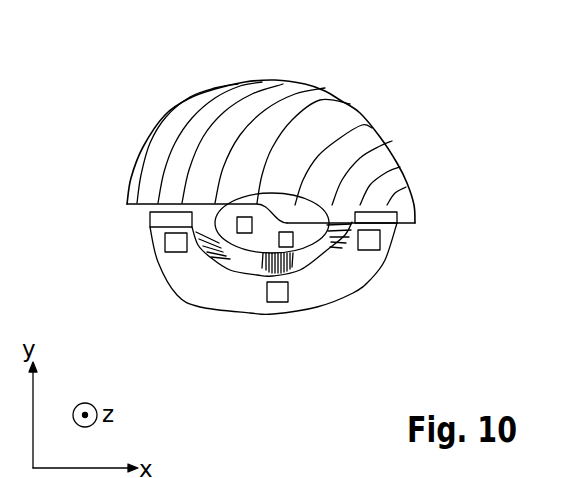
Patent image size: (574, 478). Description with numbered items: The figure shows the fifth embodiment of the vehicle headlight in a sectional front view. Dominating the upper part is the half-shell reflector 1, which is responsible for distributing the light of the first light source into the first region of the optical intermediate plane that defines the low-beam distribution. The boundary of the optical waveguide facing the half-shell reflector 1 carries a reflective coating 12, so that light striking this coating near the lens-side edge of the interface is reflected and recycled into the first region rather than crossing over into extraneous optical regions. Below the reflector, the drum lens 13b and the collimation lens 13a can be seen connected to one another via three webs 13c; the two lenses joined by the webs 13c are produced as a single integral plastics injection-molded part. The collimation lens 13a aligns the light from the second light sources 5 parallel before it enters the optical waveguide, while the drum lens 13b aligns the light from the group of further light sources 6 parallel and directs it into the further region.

The half-shell reflector 1 is at (343, 132).
The reflective coating 12 is at (157, 202).
The collimation lens 13a is at (291, 215).
The drum lens 13b is at (203, 289).
The webs 13c is at (180, 228).
The second light sources 5 is at (262, 267).
The further light sources 6 is at (178, 241).